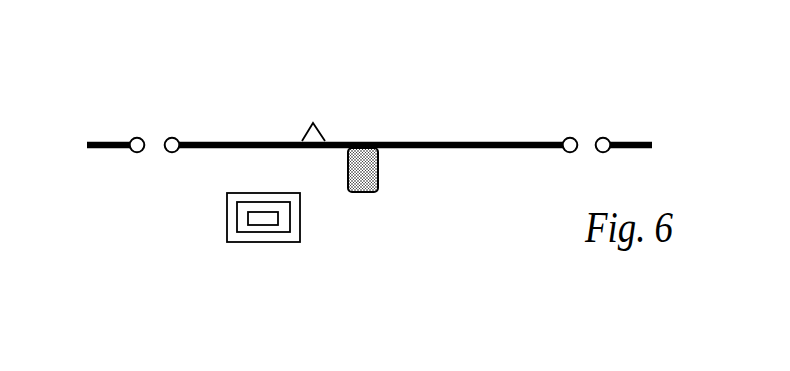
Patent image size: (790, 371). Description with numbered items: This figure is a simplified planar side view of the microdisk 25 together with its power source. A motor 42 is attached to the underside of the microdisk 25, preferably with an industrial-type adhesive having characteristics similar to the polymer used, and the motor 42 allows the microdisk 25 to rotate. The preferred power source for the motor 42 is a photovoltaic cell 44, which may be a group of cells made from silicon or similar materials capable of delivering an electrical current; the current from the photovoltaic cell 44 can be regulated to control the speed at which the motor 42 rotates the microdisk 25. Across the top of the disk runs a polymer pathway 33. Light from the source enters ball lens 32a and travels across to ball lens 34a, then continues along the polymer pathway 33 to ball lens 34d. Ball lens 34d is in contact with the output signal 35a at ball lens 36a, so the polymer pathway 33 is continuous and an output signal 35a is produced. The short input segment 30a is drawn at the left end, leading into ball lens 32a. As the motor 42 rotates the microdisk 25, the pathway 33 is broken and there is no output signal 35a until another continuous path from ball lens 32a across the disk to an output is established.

The microdisk 25 is at (430, 172).
The first end segment 30a is at (105, 141).
The ball lens 32a is at (135, 137).
The polymer pathway 33 is at (469, 141).
The ball lens 34a is at (173, 137).
The ball lens 34d is at (565, 137).
The output signal 35a is at (643, 141).
The ball lens 36a is at (607, 137).
The motor 42 is at (358, 192).
The photovoltaic cell 44 is at (237, 243).